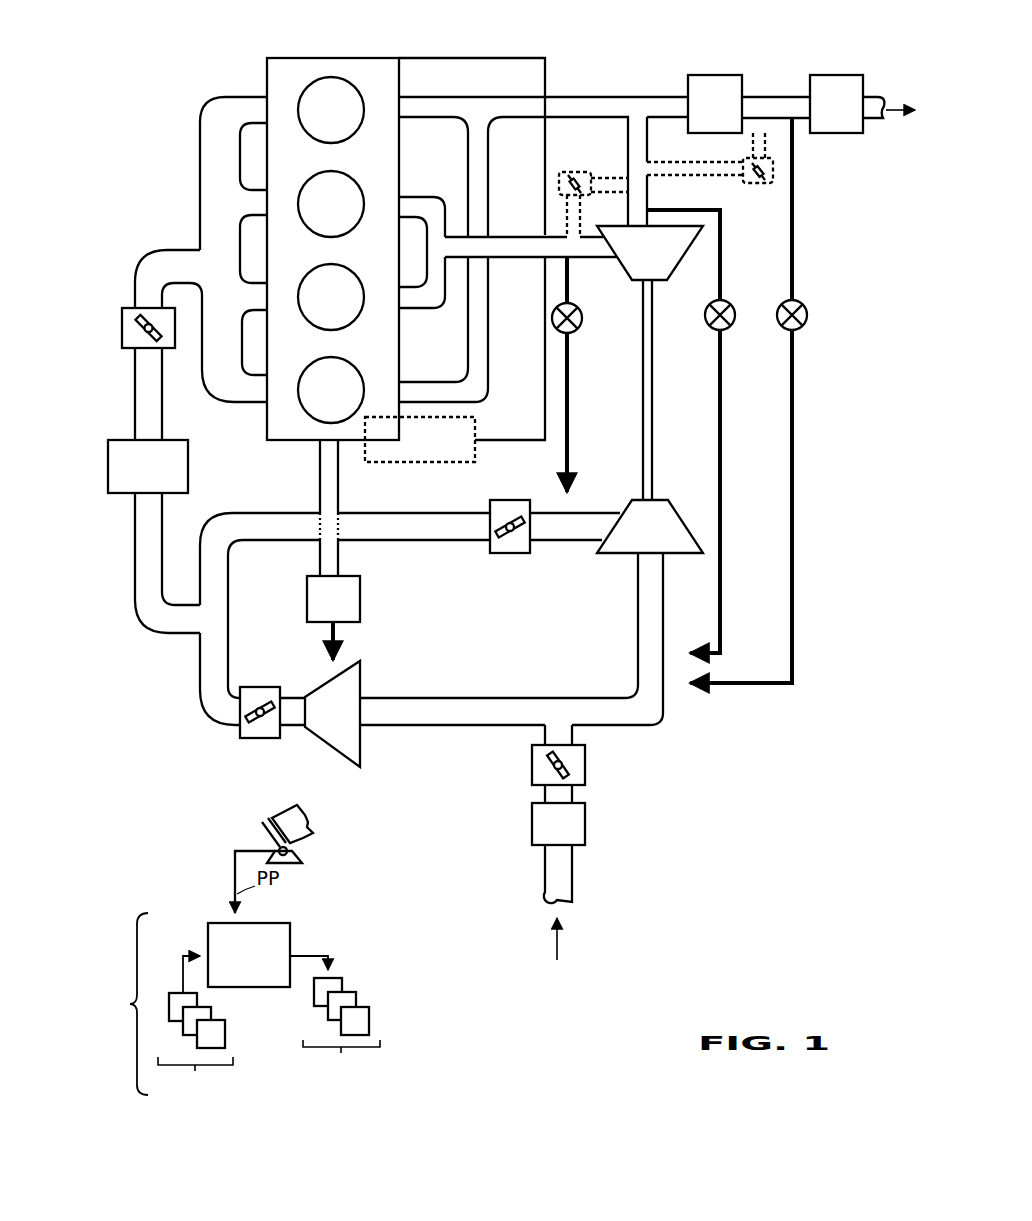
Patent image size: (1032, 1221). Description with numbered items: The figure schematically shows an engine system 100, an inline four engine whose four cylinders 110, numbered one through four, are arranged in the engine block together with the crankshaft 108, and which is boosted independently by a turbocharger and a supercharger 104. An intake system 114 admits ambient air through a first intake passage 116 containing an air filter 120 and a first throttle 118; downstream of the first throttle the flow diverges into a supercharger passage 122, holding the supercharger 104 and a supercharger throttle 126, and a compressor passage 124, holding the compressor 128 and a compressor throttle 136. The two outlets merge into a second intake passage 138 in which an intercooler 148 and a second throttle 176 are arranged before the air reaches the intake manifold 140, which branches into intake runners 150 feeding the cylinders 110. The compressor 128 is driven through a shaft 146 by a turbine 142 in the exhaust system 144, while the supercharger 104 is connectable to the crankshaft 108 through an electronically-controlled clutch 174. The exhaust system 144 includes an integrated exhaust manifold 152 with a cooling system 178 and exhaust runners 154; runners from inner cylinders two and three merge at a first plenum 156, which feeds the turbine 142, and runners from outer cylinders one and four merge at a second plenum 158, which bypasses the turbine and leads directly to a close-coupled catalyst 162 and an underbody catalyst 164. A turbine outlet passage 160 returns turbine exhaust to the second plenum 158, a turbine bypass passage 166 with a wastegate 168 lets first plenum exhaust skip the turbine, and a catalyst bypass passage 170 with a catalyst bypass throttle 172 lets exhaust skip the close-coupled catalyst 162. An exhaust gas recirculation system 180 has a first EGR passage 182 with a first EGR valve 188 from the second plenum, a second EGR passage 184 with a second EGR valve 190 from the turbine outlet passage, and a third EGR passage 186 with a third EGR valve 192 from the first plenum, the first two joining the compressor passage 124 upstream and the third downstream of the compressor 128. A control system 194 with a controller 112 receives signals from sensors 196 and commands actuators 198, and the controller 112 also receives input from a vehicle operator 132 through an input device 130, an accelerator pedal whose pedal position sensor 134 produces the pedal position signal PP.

The engine system 100 is at (153, 55).
The supercharger 104 is at (332, 714).
The crankshaft 108 is at (320, 506).
The cylinders 110 is at (346, 79).
The controller 112 is at (249, 955).
The intake system 114 is at (90, 209).
The first intake passage 116 is at (573, 870).
The first throttle 118 is at (586, 761).
The air filter 120 is at (558, 815).
The supercharger passage 122 is at (438, 697).
The compressor passage 124 is at (664, 641).
The supercharger throttle 126 is at (258, 686).
The compressor 128 is at (650, 526).
The input device 130 is at (268, 830).
The vehicle operator 132 is at (309, 820).
The pedal position sensor 134 is at (303, 856).
The compressor throttle 136 is at (509, 554).
The second intake passage 138 is at (135, 576).
The intake manifold 140 is at (199, 223).
The turbine 142 is at (650, 253).
The exhaust system 144 is at (656, 47).
The shaft 146 is at (654, 381).
The intercooler 148 is at (148, 466).
The intake runners 150 is at (250, 96).
The integrated exhaust manifold 152 is at (462, 57).
The exhaust runners 154 is at (433, 380).
The first plenum 156 is at (527, 259).
The second plenum 158 is at (560, 96).
The turbine outlet passage 160 is at (648, 159).
The close-coupled catalyst 162 is at (715, 104).
The underbody catalyst 164 is at (836, 104).
The turbine bypass passage 166 is at (608, 178).
The wastegate 168 is at (570, 173).
The catalyst bypass passage 170 is at (705, 170).
The catalyst bypass throttle 172 is at (757, 186).
The electronically-controlled clutch 174 is at (333, 618).
The second throttle 176 is at (122, 325).
The cooling system 178 is at (420, 439).
The exhaust gas recirculation system 180 is at (826, 480).
The first EGR passage 182 is at (794, 416).
The second EGR passage 184 is at (722, 416).
The third EGR passage 186 is at (570, 413).
The first EGR valve 188 is at (805, 308).
The second EGR valve 190 is at (732, 308).
The third EGR valve 192 is at (581, 315).
The control system 194 is at (130, 1004).
The sensors 196 is at (195, 1023).
The actuators 198 is at (335, 1014).